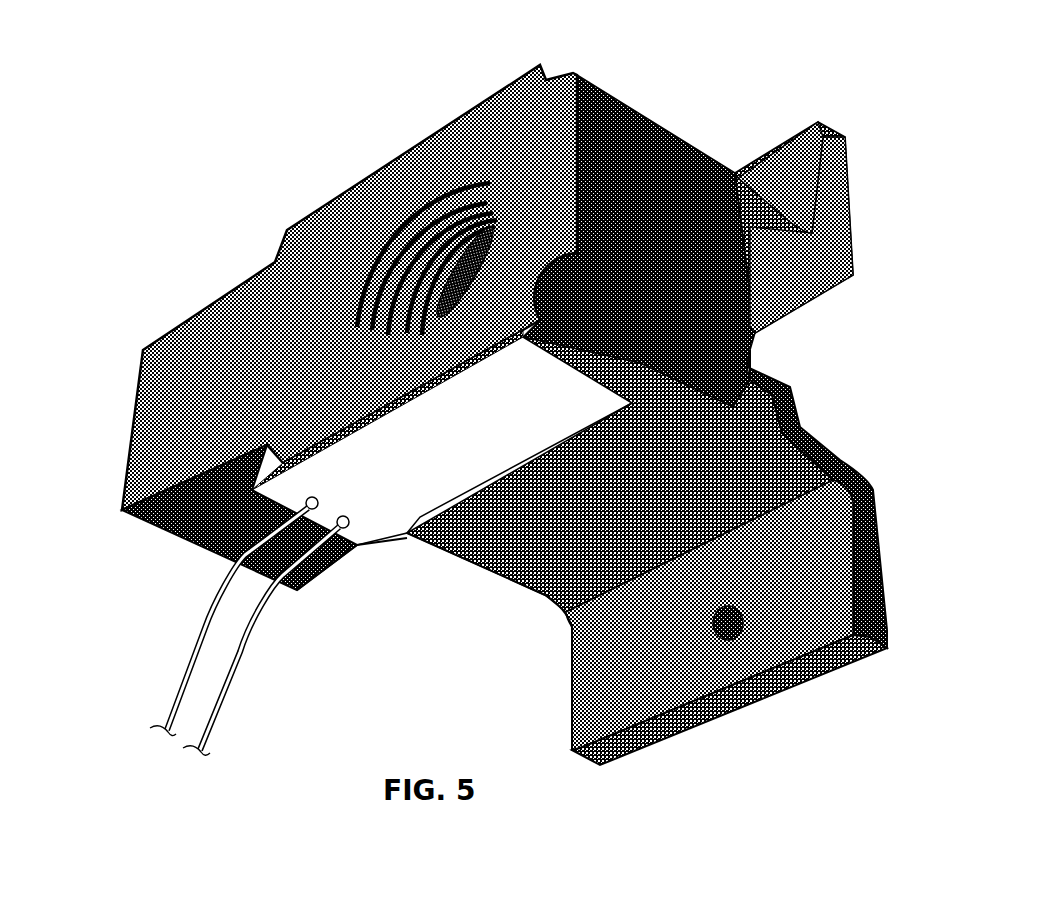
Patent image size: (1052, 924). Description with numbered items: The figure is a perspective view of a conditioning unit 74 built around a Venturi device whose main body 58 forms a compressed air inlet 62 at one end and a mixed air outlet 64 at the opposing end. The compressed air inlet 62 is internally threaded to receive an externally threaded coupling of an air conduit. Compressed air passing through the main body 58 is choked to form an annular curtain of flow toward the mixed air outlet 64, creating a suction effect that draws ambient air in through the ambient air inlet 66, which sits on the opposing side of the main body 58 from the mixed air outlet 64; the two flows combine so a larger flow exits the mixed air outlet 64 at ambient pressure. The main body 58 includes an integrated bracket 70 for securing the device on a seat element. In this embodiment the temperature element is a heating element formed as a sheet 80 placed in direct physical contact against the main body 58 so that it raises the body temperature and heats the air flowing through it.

The compressed air inlet 62 is at (469, 390).
The conditioning unit 74 is at (377, 307).
The main body 58 is at (633, 135).
The ambient air inlet 66 is at (360, 241).
The mixed air outlet 64 is at (842, 432).
The integrated bracket 70 is at (785, 638).
The sheet 80 is at (397, 489).